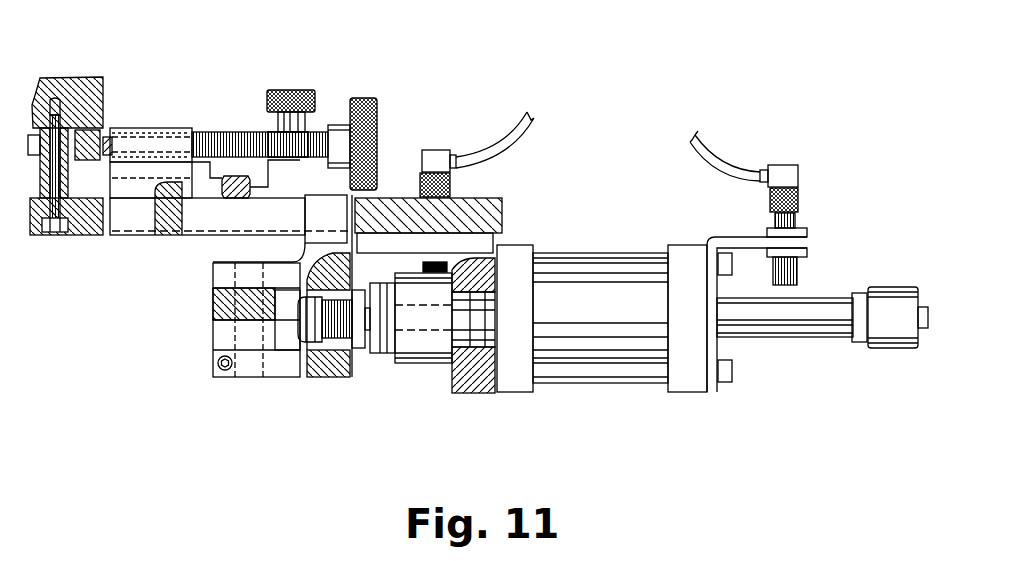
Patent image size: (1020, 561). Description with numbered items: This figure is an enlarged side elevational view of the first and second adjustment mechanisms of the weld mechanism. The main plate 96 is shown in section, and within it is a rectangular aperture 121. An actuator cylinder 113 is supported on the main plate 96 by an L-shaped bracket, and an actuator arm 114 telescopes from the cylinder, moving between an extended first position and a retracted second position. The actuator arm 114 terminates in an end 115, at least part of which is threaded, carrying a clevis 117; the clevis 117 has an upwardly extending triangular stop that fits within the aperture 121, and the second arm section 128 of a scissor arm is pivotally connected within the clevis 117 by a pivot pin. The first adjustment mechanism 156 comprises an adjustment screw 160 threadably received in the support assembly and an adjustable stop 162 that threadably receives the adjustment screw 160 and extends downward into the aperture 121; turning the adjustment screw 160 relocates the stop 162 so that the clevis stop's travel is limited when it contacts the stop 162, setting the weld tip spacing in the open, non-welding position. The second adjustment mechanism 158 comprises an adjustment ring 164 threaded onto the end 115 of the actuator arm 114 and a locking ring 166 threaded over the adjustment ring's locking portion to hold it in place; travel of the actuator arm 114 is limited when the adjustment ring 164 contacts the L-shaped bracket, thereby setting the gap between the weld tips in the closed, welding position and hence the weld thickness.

The main plate 96 is at (490, 197).
The actuator cylinder 113 is at (605, 248).
The actuator arm 114 is at (790, 337).
The end 115 is at (297, 312).
The clevis 117 is at (228, 377).
The aperture 121 is at (259, 219).
The second arm section 128 is at (207, 337).
The first adjustment mechanism 156 is at (306, 78).
The second adjustment mechanism 158 is at (406, 388).
The adjustment screw 160 is at (380, 130).
The adjustable stop 162 is at (150, 128).
The adjustment ring 164 is at (420, 367).
The locking ring 166 is at (385, 353).